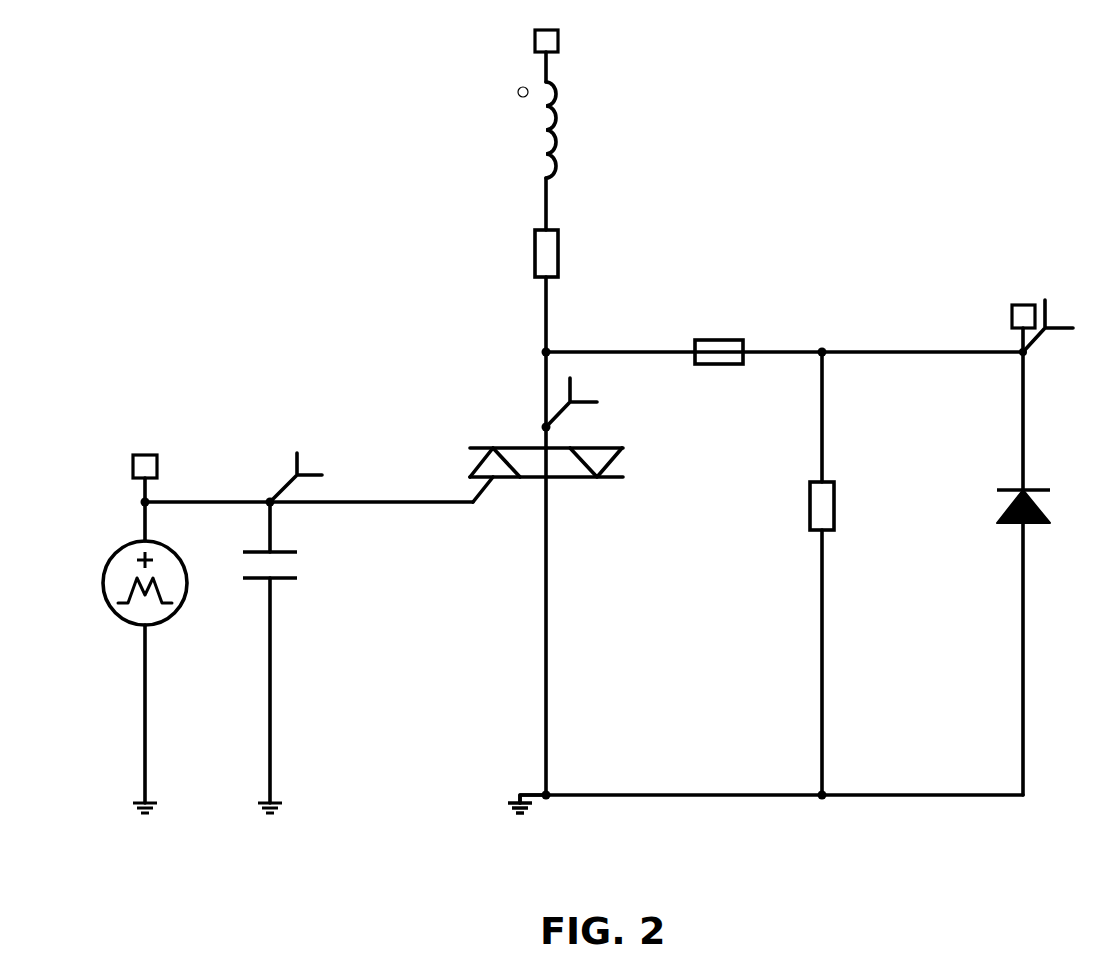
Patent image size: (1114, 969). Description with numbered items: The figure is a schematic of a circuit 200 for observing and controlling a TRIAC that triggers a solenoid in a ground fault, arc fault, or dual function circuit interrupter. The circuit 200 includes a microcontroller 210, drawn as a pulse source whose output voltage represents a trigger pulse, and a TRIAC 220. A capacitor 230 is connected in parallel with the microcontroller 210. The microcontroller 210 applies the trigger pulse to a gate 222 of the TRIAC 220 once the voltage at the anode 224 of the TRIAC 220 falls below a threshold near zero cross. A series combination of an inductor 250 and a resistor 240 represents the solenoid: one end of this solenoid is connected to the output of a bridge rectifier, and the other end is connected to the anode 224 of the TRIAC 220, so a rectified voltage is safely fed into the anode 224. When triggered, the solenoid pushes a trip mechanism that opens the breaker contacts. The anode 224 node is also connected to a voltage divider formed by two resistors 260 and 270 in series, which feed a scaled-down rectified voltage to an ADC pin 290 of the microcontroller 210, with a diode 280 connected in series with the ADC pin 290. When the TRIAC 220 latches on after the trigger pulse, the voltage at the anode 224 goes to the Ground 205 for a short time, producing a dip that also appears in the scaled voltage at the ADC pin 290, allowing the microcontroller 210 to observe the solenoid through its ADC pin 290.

The circuit 200 is at (966, 106).
The Ground 205 is at (497, 793).
The microcontroller 210 is at (133, 540).
The TRIAC 220 is at (568, 493).
The gate 222 is at (501, 497).
The anode 224 is at (535, 425).
The capacitor 230 is at (307, 580).
The resistor 240 is at (570, 268).
The inductor 250 is at (562, 122).
The resistor 260 is at (720, 325).
The resistor 270 is at (785, 512).
The diode 280 is at (972, 512).
The ADC pin 290 is at (1018, 347).